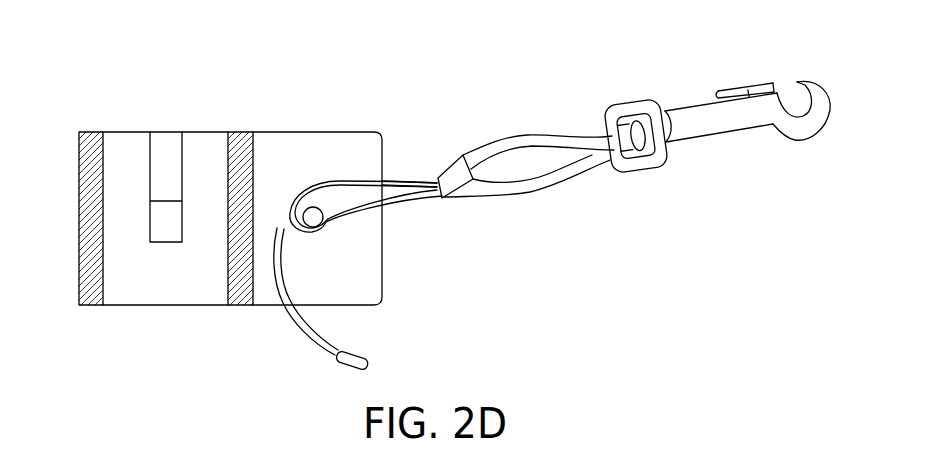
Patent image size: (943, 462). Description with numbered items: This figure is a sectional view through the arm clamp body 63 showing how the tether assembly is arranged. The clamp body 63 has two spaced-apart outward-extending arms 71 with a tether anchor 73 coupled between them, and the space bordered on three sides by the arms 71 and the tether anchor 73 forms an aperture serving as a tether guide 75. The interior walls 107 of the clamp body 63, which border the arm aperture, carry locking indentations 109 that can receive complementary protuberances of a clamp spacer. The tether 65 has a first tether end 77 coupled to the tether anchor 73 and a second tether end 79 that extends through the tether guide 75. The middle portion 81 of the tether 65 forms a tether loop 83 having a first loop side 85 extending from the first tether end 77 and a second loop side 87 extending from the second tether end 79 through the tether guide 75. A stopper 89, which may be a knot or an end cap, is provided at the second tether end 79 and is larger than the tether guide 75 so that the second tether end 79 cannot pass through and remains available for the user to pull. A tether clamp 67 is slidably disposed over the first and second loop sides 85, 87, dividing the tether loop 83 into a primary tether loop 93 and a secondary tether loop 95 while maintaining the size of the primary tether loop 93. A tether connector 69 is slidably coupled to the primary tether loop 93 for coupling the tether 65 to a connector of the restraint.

The clamp body 63 is at (91, 132).
The tether 65 is at (597, 139).
The tether clamp 67 is at (452, 163).
The tether connector 69 is at (715, 117).
The outward-extending arms 71 is at (342, 132).
The tether anchor 73 is at (313, 220).
The tether guide 75 is at (275, 191).
The first tether end 77 is at (333, 223).
The second tether end 79 is at (285, 318).
The middle portion 81 is at (413, 177).
The tether loop 83 is at (528, 137).
The first loop side 85 is at (515, 188).
The second loop side 87 is at (490, 140).
The stopper 89 is at (342, 368).
The primary tether loop 93 is at (578, 163).
The secondary tether loop 95 is at (395, 178).
The interior walls 107 is at (212, 132).
The locking indentations 109 is at (160, 143).